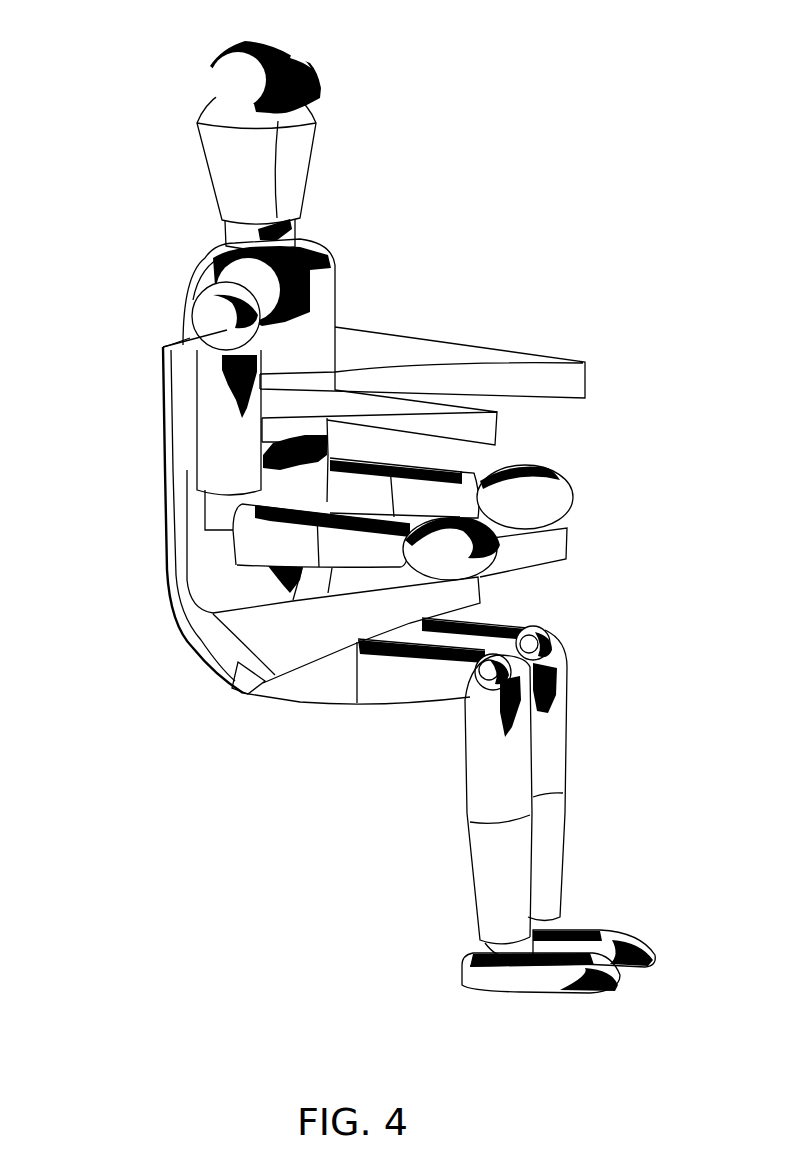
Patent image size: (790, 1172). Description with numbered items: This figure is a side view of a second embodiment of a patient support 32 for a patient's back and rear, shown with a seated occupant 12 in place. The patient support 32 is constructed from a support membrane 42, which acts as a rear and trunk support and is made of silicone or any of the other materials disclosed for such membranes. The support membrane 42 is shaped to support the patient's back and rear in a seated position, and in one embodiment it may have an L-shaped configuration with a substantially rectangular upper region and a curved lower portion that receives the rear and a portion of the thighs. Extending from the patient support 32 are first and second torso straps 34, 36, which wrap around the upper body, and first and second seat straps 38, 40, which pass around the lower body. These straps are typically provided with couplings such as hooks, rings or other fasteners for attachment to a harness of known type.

The occupant (mannequin) 12 is at (458, 101).
The patient support 32 is at (372, 454).
The first torso strap 34 is at (590, 358).
The second torso strap 36 is at (500, 433).
The first seat strap 38 is at (557, 540).
The second seat strap 40 is at (470, 595).
The support membrane 42 is at (160, 562).